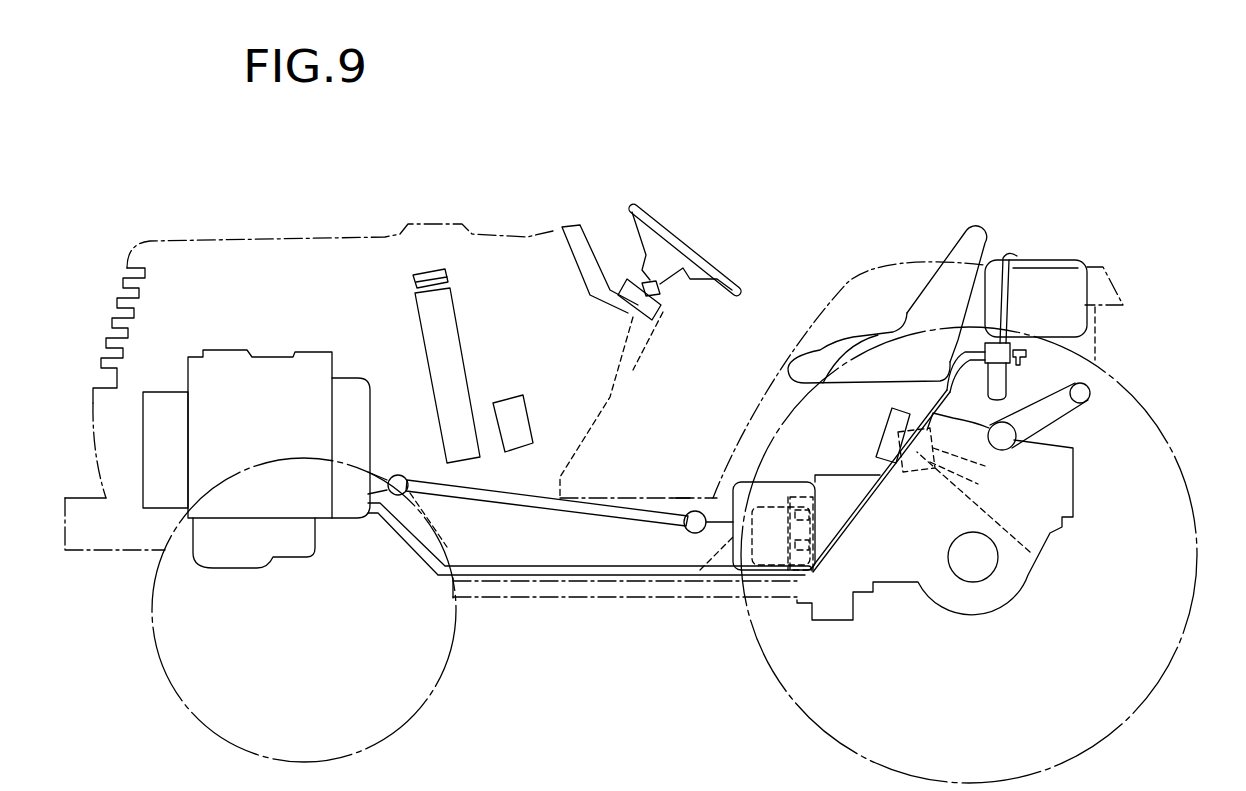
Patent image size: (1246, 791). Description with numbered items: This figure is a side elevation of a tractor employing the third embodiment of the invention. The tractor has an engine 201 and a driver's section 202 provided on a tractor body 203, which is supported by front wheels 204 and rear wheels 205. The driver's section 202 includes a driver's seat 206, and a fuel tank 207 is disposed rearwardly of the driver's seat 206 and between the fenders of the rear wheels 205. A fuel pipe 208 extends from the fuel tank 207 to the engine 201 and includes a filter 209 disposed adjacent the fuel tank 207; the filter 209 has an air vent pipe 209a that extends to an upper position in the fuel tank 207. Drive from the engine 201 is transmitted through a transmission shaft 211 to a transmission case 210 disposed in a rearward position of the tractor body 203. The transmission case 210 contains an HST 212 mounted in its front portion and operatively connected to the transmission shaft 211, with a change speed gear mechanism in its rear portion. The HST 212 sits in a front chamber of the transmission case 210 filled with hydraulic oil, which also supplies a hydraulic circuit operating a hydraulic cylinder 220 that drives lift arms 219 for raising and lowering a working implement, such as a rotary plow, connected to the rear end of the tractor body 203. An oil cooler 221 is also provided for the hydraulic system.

The engine 201 is at (274, 354).
The driver's section 202 is at (767, 242).
The tractor body 203 is at (259, 239).
The front wheels 204 is at (448, 668).
The rear wheels 205 is at (797, 697).
The driver's seat 206 is at (965, 225).
The fuel tank 207 is at (1063, 259).
The fuel pipe 208 is at (881, 489).
The filter 209 is at (1003, 384).
The air vent pipe 209a is at (1018, 254).
The transmission case 210 is at (895, 585).
The transmission shaft 211 is at (678, 498).
The HST 212 is at (735, 560).
The lift arms 219 is at (1072, 413).
The hydraulic cylinder 220 is at (1030, 552).
The oil cooler 221 is at (533, 432).